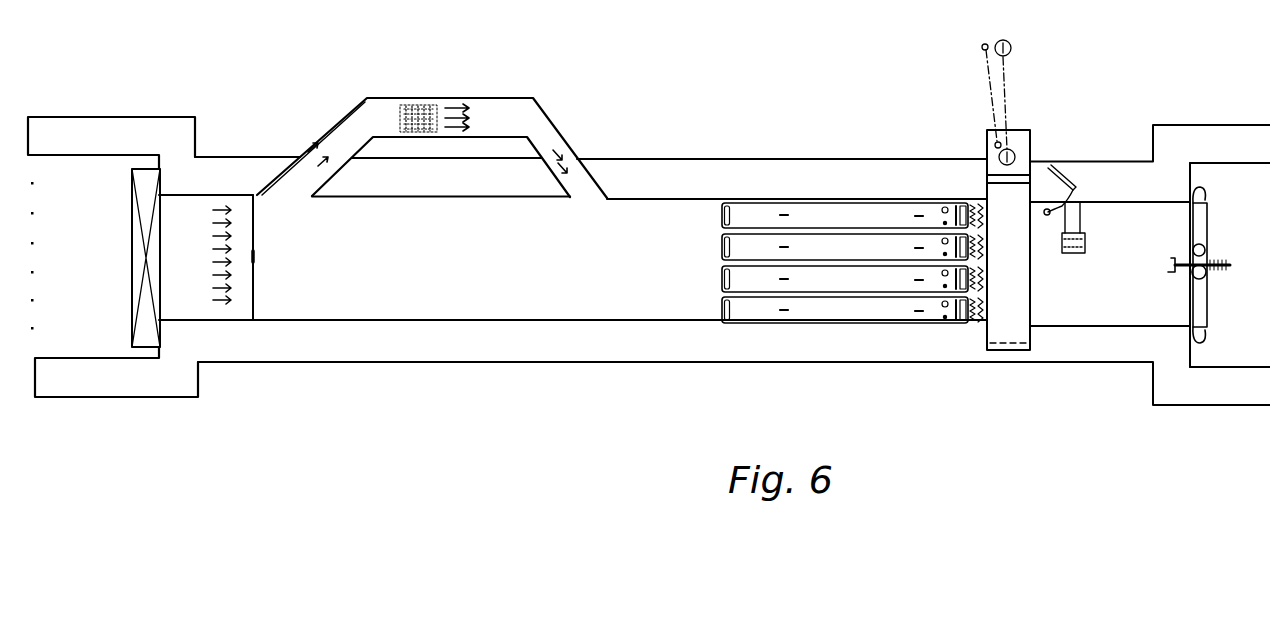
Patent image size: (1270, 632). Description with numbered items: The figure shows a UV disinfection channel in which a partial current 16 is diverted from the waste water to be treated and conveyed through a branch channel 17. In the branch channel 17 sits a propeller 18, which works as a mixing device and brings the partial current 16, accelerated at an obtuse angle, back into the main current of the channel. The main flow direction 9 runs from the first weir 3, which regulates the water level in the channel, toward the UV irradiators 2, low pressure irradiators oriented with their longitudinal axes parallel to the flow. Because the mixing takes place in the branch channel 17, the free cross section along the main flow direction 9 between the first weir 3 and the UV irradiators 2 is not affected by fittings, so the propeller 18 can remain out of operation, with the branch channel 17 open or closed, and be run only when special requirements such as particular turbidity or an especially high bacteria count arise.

The UV irradiators 2 is at (747, 222).
The first weir 3 is at (256, 302).
The flow arrows 9 is at (222, 303).
The partial current 16 is at (327, 152).
The branch channel 17 is at (363, 123).
The propeller 18 is at (427, 105).